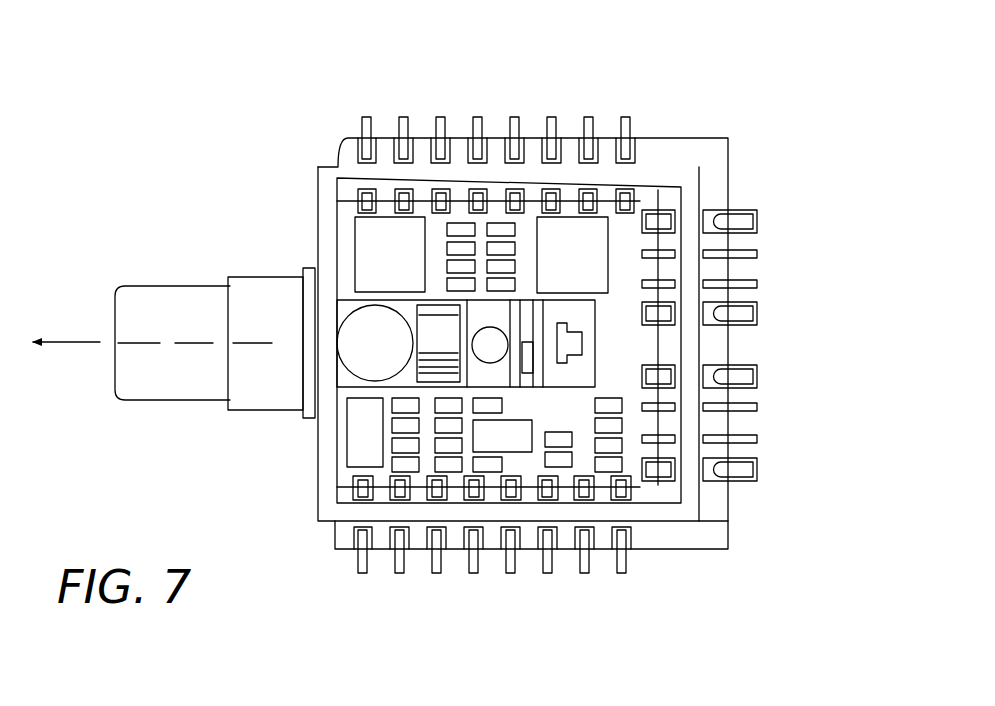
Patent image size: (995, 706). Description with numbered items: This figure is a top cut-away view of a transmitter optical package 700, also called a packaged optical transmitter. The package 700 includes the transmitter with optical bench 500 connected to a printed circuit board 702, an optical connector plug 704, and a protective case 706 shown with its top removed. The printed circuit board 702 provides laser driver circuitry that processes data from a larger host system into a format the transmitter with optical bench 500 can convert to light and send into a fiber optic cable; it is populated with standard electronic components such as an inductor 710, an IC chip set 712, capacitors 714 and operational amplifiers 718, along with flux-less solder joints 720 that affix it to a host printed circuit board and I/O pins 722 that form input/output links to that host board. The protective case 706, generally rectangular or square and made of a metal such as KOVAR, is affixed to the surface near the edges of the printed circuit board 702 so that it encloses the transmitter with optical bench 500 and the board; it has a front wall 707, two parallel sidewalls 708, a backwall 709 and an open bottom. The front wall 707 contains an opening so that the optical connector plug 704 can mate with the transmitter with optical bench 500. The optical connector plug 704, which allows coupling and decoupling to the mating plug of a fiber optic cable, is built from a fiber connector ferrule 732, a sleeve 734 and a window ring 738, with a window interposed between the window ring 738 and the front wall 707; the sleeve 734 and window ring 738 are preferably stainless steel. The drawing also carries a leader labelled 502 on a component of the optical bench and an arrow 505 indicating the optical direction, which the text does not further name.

The transmitter optical package 700 is at (183, 95).
The I/O pins 722 is at (650, 110).
The sidewalls 708 is at (685, 178).
The operational amplifiers 718 is at (598, 235).
The protective case 706 is at (715, 155).
The capacitor 502 is at (360, 337).
The front wall 707 is at (328, 198).
The optical connector plug 704 is at (317, 262).
The direction of insertion 505 is at (80, 342).
The fiber connector ferrule 732 is at (153, 387).
The sleeve 734 is at (263, 390).
The window ring 738 is at (305, 422).
The inductor 710 is at (365, 440).
The transmitter with optical bench 500 is at (466, 393).
The IC chip set 712 is at (523, 440).
The capacitors 714 is at (605, 445).
The flux-less solder joints 720 is at (723, 540).
The backwall 709 is at (688, 345).
The printed circuit board 702 is at (642, 357).